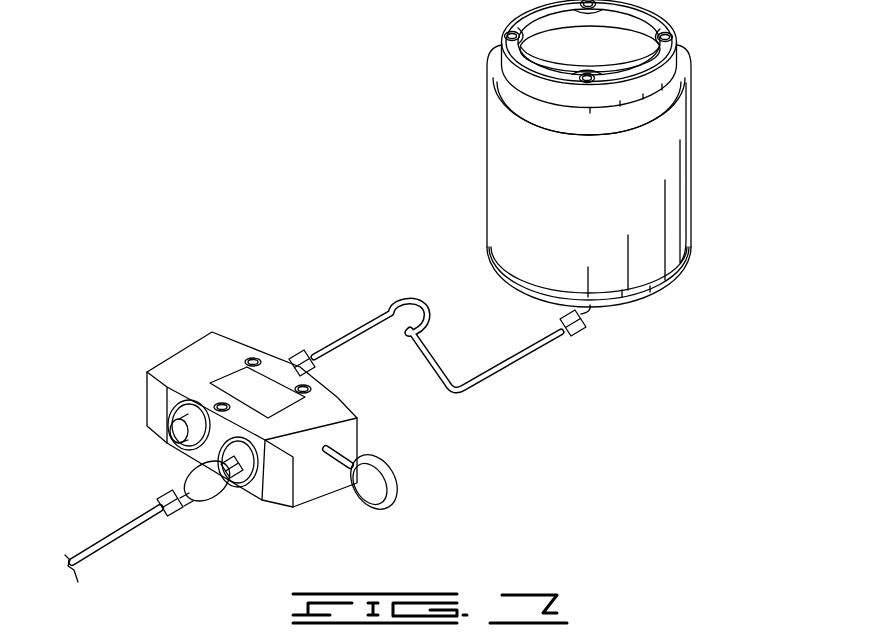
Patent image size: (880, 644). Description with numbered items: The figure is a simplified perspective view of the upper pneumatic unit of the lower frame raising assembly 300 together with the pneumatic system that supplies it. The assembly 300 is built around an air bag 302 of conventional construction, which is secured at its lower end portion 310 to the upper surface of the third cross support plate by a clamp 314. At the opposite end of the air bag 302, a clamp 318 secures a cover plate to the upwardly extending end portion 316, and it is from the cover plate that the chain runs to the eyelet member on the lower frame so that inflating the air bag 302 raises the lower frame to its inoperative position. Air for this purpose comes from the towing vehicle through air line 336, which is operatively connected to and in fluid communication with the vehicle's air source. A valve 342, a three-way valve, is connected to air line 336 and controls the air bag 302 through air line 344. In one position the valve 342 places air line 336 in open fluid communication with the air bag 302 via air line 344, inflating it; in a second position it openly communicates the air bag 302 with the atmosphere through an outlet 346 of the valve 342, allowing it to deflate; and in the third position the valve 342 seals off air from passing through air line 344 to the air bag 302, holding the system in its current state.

The lower frame raising assembly 300 is at (443, 115).
The air bag 302 is at (668, 172).
The lower end portion 310 is at (680, 242).
The clamp 314 is at (673, 283).
The upwardly extending end portion 316 is at (680, 88).
The clamp 318 is at (665, 73).
The air line 336 is at (118, 535).
The valve 342 is at (157, 347).
The air line 344 is at (497, 367).
The outlet 346 is at (177, 420).